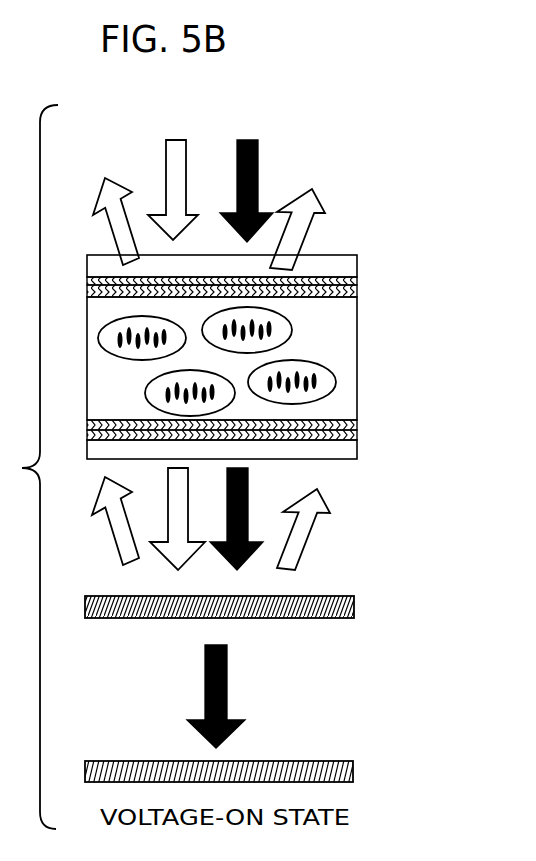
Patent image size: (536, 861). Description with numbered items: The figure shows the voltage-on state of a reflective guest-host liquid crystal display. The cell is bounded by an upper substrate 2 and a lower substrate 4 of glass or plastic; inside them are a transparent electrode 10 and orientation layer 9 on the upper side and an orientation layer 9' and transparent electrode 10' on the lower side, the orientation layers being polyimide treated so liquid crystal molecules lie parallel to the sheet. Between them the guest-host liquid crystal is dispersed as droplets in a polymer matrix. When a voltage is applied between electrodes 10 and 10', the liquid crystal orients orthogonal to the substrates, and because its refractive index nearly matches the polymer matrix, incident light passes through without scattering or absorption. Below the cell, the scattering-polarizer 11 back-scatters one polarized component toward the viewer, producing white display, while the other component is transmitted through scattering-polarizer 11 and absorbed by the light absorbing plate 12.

The substrate 2 is at (350, 264).
The transparent electrode 10 is at (257, 278).
The orientation layer 9 is at (241, 295).
The orientation layer 9' is at (242, 424).
The transparent electrode 10' is at (260, 443).
The substrate 4 is at (357, 456).
The scattering-polarizer 11 is at (354, 606).
The light absorbing plate 12 is at (353, 773).